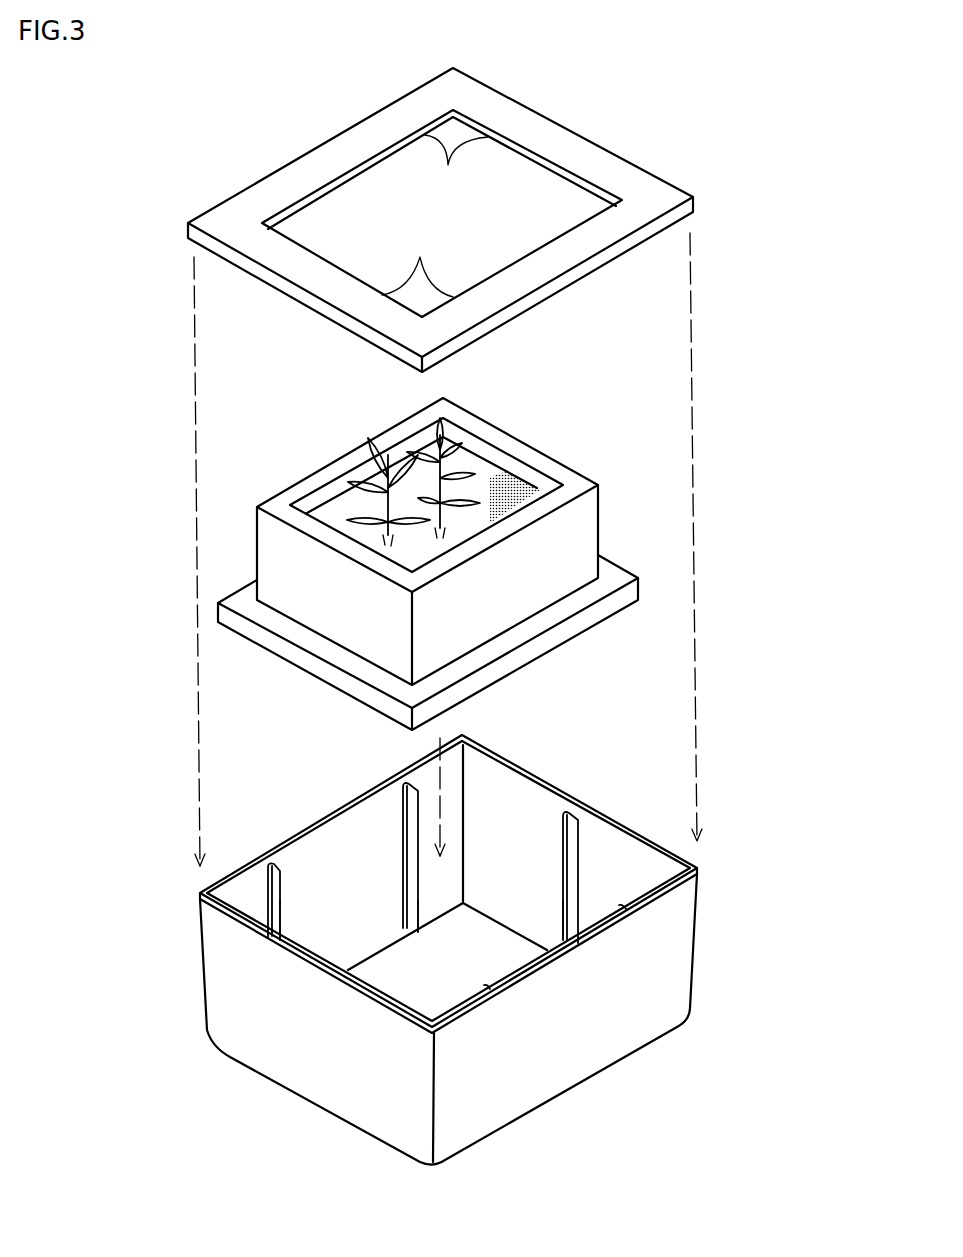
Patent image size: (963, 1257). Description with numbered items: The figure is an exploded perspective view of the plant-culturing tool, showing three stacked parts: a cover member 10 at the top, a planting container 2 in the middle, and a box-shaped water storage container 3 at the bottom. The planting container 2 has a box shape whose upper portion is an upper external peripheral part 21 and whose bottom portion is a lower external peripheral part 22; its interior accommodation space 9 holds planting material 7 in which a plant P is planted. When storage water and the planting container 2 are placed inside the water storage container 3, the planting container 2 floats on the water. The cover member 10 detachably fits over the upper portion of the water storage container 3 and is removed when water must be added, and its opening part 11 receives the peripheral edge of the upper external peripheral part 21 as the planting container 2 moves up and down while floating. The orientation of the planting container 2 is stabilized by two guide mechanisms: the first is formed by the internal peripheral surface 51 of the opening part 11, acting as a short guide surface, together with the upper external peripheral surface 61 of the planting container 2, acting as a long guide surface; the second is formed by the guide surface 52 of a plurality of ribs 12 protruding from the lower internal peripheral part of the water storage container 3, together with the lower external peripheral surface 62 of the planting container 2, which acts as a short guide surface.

The cover member 10 is at (598, 250).
The opening part 11 is at (537, 198).
The internal peripheral surface 51 is at (445, 216).
The planting container 2 is at (523, 564).
The upper external peripheral part 21 is at (598, 527).
The lower external peripheral part 22 is at (618, 570).
The planting material 7 is at (328, 513).
The plant P is at (430, 438).
The accommodation space 9 is at (493, 480).
The upper external peripheral surface 61 is at (325, 609).
The lower external peripheral surface 62 is at (240, 625).
The water storage container 3 is at (583, 1065).
The ribs 12 is at (268, 872).
The guide surface 52 is at (285, 905).